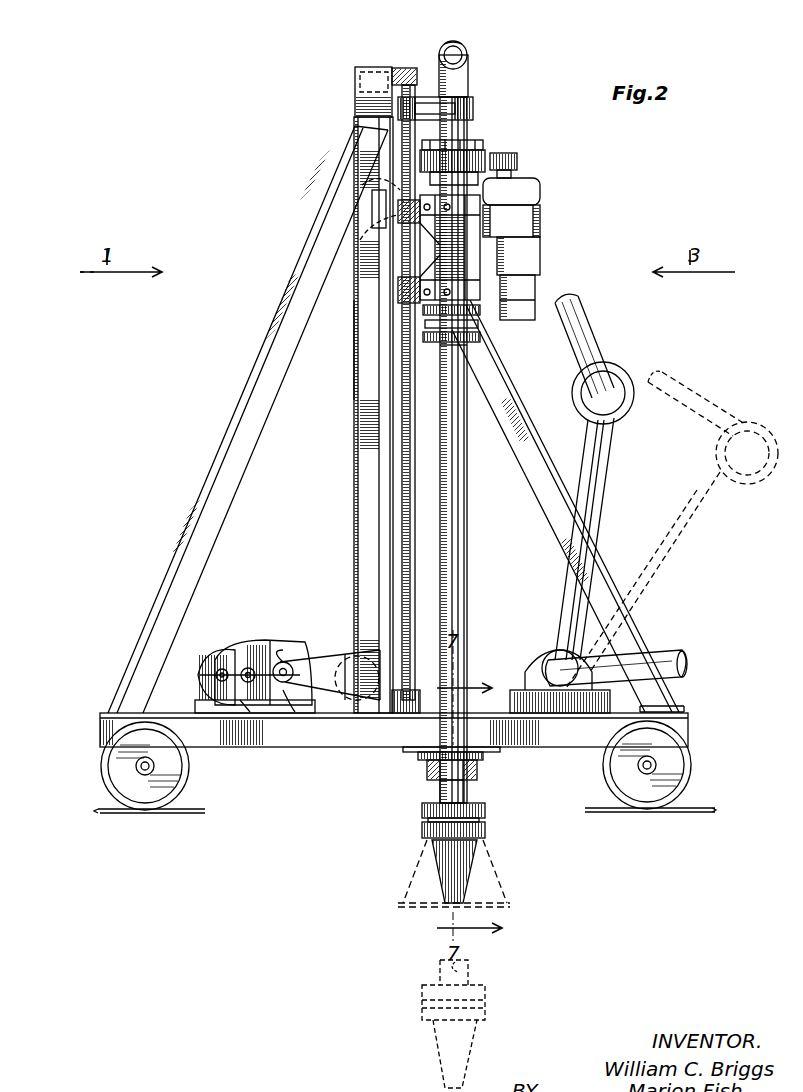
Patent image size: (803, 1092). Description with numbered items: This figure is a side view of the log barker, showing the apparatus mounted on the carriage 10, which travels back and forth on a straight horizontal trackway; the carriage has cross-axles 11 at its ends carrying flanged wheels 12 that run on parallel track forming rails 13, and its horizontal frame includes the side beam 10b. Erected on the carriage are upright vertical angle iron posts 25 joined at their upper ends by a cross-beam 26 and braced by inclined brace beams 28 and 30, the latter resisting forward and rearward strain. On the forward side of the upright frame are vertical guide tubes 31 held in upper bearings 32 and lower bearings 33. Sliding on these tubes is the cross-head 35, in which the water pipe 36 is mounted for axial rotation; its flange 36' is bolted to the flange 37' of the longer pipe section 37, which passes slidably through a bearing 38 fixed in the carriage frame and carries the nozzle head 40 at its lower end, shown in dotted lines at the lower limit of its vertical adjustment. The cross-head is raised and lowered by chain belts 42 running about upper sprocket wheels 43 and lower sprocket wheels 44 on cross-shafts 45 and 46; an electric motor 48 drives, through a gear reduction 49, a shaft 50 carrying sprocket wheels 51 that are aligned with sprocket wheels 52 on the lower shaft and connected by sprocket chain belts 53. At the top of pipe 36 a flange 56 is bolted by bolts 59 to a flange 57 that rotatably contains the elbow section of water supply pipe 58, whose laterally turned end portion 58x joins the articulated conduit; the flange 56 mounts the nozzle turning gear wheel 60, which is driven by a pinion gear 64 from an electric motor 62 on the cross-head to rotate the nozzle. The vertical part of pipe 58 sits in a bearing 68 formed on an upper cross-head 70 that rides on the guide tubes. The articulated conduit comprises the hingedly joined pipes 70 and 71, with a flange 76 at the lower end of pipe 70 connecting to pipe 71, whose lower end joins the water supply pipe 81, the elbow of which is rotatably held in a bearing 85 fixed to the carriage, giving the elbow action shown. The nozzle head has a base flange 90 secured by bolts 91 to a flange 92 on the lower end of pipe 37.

The carriage 10 is at (90, 739).
The side beam 10b is at (545, 726).
The cross-axle 11 is at (143, 770).
The wheel 12 is at (138, 764).
The track forming rail 13 is at (112, 814).
The vertical angle iron post 25 is at (356, 90).
The cross-beam 26 is at (365, 72).
The brace beam 28 is at (372, 433).
The brace beam 30 is at (240, 428).
The guide tube 31 is at (403, 496).
The bearing 32 is at (405, 68).
The bearing 33 is at (408, 704).
The cross-head 35 is at (482, 232).
The water pipe 36 is at (542, 278).
The flange 36' is at (485, 329).
The pipe section 37 is at (433, 466).
The flange 37' is at (499, 362).
The bearing 38 is at (437, 772).
The nozzle head 40 is at (420, 1000).
The chain belt 42 is at (356, 345).
The sprocket wheel 43 is at (378, 228).
The sprocket wheel 44 is at (256, 722).
The cross-shaft 45 is at (372, 206).
The cross shaft 46 is at (366, 693).
The electric motor 48 is at (220, 652).
The gear reduction 49 is at (252, 648).
The shaft 50 is at (298, 670).
The sprocket wheel 51 is at (290, 665).
The sprocket wheel 52 is at (352, 700).
The sprocket chain belt 53 is at (288, 708).
The flange 56 is at (540, 190).
The flange 57 is at (486, 160).
The elbow section of water supply pipe 58 is at (466, 78).
The laterally turned end portion 58x is at (455, 43).
The bolt 59 is at (480, 142).
The nozzle turning gear wheel 60 is at (518, 158).
The electric motor 62 is at (541, 215).
The pinion gear 64 is at (512, 172).
The bearing 68 is at (474, 108).
The cross-head; pipe section of articulated conduit 70 is at (422, 104).
The pipe section of articulated conduit 71 is at (596, 492).
The flange 76 is at (622, 385).
The water supply pipe 81 is at (684, 666).
The bearing 85 is at (548, 658).
The base flange 90 is at (486, 830).
The bolt 91 is at (480, 860).
The flange 92 is at (486, 808).